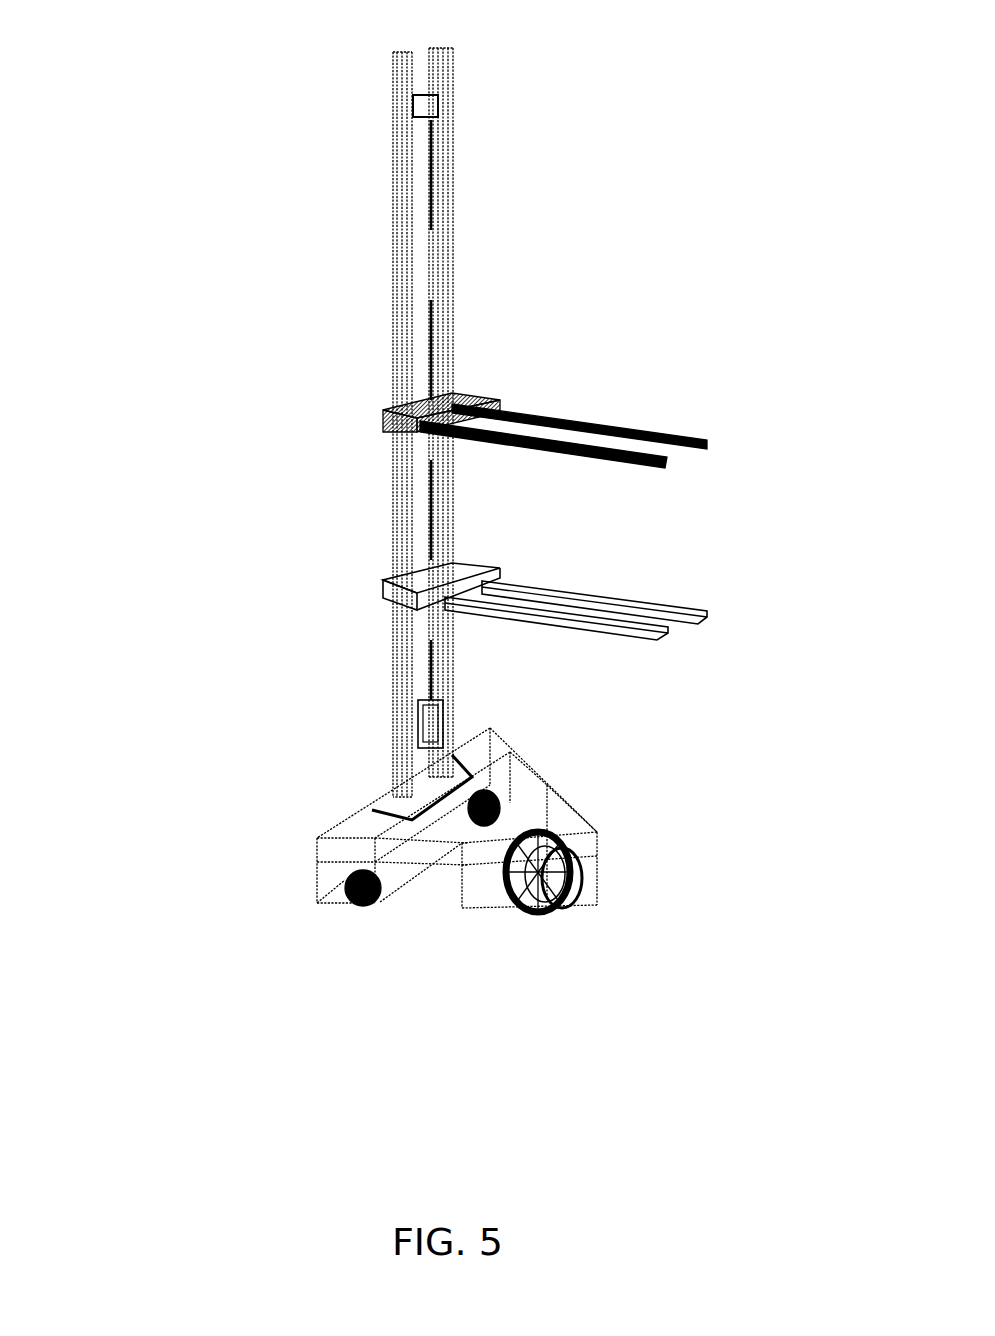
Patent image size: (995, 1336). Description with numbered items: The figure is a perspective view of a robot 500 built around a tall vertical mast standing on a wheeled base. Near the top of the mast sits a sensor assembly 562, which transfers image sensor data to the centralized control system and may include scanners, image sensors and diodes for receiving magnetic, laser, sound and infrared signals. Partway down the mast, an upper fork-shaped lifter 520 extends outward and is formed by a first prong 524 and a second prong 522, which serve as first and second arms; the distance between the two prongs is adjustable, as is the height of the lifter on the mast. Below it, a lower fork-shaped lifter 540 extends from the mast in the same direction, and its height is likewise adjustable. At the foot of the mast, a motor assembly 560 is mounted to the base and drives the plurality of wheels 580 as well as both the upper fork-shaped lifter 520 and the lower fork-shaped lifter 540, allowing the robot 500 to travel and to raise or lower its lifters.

The robot 500 is at (168, 63).
The upper fork-shaped lifter 520 is at (618, 437).
The second prong 522 is at (643, 482).
The first prong 524 is at (717, 460).
The lower fork-shaped lifter 540 is at (680, 645).
The motor assembly 560 is at (392, 803).
The sensor assembly 562 is at (428, 102).
The plurality of wheels 580 is at (510, 893).